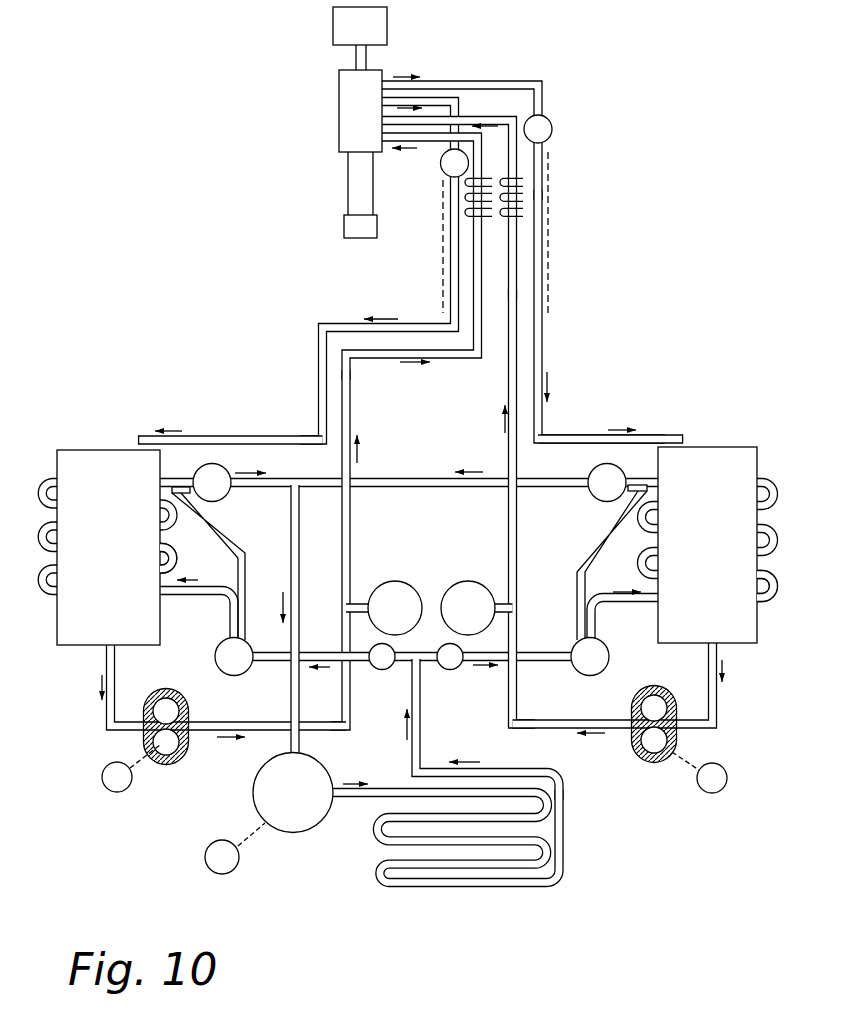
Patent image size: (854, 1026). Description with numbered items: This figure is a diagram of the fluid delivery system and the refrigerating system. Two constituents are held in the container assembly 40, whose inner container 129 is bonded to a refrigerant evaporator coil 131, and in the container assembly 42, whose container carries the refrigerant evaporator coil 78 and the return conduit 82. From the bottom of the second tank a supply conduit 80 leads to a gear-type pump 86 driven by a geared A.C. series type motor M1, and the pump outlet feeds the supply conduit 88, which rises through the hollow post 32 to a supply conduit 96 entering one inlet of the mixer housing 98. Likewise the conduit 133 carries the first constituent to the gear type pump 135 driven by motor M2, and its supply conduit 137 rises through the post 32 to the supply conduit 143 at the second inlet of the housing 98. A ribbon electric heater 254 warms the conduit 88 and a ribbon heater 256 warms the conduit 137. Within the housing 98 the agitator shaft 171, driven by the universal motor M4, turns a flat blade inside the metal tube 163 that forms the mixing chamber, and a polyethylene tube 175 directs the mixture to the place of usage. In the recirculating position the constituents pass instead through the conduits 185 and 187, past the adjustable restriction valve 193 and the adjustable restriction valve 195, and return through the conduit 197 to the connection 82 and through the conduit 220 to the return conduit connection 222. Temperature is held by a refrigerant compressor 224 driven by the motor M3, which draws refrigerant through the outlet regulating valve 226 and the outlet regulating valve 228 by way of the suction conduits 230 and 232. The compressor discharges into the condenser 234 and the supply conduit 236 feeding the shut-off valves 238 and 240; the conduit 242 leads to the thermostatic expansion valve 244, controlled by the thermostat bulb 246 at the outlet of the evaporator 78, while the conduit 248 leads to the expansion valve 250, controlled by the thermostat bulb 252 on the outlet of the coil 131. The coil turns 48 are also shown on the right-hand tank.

The universal motor M4 is at (333, 28).
The agitator shaft 171 is at (363, 60).
The mixer housing 98 is at (338, 88).
The metal tube 163 is at (350, 183).
The polyethylene tube 175 is at (344, 226).
The conduit 187 is at (442, 98).
The conduit 185 is at (507, 82).
The supply conduit 96 is at (463, 117).
The adjustable restriction valve 193 is at (552, 125).
The supply conduit 143 is at (437, 142).
The adjustable restriction valve 195 is at (449, 172).
The ribbon heater 256 is at (468, 197).
The ribbon electric heater 254 is at (523, 192).
The hollow post 32 is at (552, 247).
The conduit 220 is at (451, 285).
The conduit 197 is at (543, 288).
The return conduit connection 222 is at (141, 437).
The inner container 129 is at (55, 472).
The return conduit 82 is at (672, 436).
The refrigerant evaporator coil 78 is at (773, 488).
The suction conduit 230 is at (410, 483).
The outlet regulating valve 228 is at (222, 492).
The thermostat bulb 252 is at (192, 495).
The outlet regulating valve 226 is at (598, 495).
The thermostat bulb 246 is at (636, 490).
The refrigerant evaporator coil 131 is at (178, 560).
The supply conduit 137 is at (350, 522).
The supply conduit 88 is at (510, 538).
The suction conduit 232 is at (297, 578).
The conduit 248 is at (328, 652).
The conduit 242 is at (562, 620).
The coil loop 48 is at (760, 608).
The container assembly 40 is at (72, 650).
The conduit 133 is at (110, 667).
The expansion valve 250 is at (226, 676).
The shut-off valve 240 is at (388, 670).
The shut-off valve 238 is at (453, 670).
The thermostatic expansion valve 244 is at (588, 674).
The container assembly 42 is at (737, 645).
The supply conduit 80 is at (717, 707).
The gear type pump 135 is at (172, 753).
The geared A.C. series type motor M2 is at (118, 792).
The supply conduit 236 is at (421, 723).
The gear-type pump 86 is at (640, 753).
The geared A.C. series type motor M1 is at (718, 793).
The compressor motor M3 is at (206, 860).
The refrigerant compressor 224 is at (298, 825).
The condenser 234 is at (380, 866).